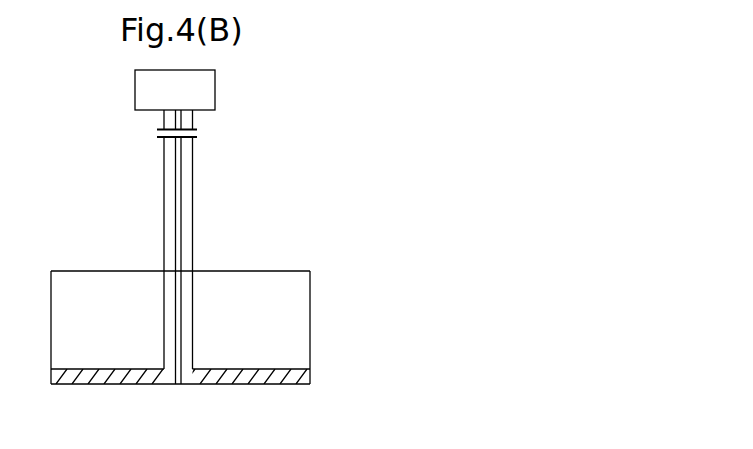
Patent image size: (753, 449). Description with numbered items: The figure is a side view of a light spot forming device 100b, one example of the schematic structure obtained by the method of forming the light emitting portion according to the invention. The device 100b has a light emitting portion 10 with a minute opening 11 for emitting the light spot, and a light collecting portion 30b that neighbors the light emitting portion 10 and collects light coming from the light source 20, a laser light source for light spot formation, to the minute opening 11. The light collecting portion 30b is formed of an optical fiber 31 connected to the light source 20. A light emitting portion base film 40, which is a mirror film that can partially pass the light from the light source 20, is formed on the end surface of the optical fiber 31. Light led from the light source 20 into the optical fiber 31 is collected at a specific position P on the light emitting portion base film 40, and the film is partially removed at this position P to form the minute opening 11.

The light source 20 is at (215, 88).
The optical fiber 31 is at (193, 155).
The minute opening 11 is at (179, 386).
The light emitting portion 10 is at (190, 393).
The light collecting portion 30b is at (314, 300).
The light emitting portion base film 40 is at (287, 377).
The light spot forming device 100b is at (350, 168).
The specific position P is at (177, 361).